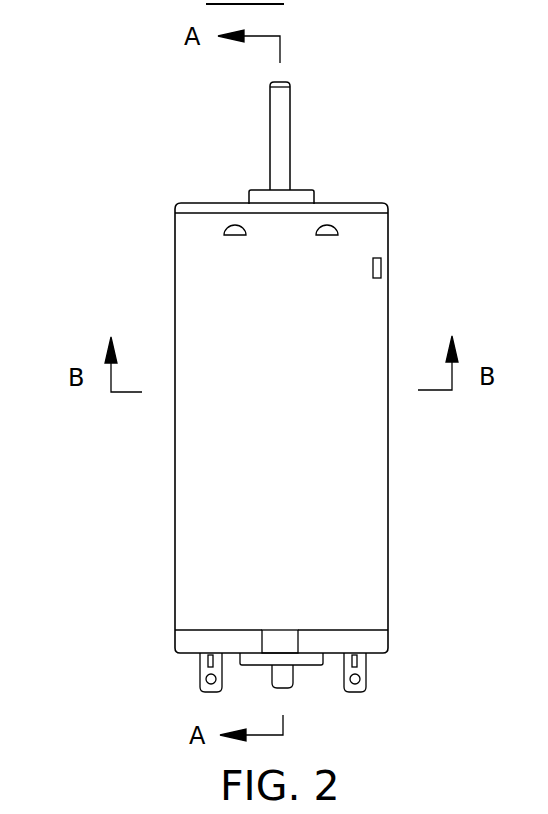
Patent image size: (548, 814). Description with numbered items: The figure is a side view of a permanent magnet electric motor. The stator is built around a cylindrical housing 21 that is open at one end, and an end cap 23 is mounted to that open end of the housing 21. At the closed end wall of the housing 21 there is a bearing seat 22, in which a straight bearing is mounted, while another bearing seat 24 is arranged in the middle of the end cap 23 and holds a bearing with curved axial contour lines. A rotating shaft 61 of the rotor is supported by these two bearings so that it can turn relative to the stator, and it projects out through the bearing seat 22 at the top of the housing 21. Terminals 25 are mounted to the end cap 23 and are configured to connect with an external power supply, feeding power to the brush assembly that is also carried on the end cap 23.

The rotating shaft 61 is at (280, 117).
The bearing seat 22 is at (257, 195).
The cylindrical housing 21 is at (237, 302).
The end cap 23 is at (192, 641).
The bearing seat 24 is at (303, 658).
The terminals 25 is at (202, 672).